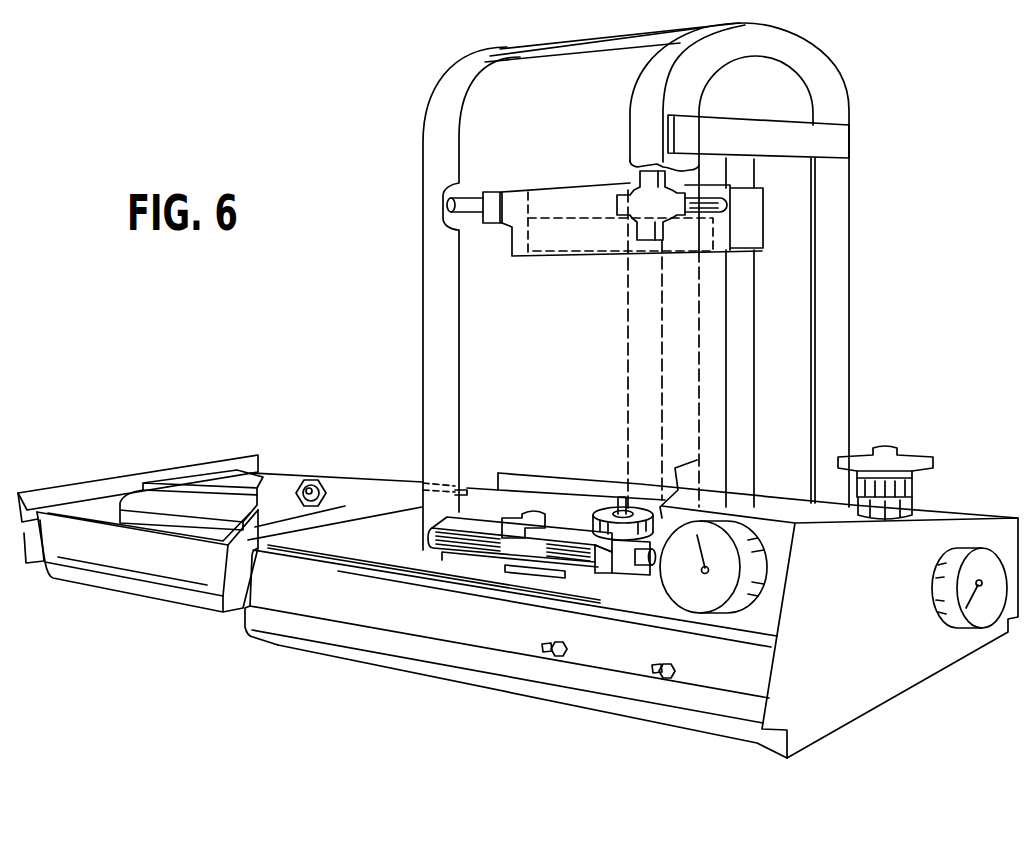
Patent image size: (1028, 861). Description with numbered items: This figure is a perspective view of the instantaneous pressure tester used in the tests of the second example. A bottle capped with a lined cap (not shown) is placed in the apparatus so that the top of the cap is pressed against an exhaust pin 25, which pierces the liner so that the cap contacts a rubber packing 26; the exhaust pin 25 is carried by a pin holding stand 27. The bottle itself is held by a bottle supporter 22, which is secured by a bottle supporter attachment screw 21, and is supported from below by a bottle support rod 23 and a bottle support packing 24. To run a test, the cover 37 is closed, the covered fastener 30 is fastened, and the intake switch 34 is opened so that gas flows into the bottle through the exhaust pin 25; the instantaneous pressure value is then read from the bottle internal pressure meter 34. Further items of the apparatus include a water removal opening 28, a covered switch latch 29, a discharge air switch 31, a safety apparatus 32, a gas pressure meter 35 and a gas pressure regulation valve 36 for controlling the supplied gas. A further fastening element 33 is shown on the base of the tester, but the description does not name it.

The bottle supporter attachment screw 21 is at (633, 176).
The bottle supporter 22 is at (563, 178).
The bottle support rod 23 is at (446, 202).
The bottle support packing 24 is at (588, 238).
The exhaust pin 25 is at (620, 497).
The rubber packing 26 is at (607, 513).
The pin holding stand 27 is at (587, 520).
The water removal opening 28 is at (313, 480).
The covered switch latch 29 is at (497, 562).
The covered fastener 30 is at (527, 540).
The discharge air switch 31 is at (545, 651).
The safety apparatus 32 is at (643, 568).
The bolt 33 is at (658, 675).
The intake switch 34 is at (723, 588).
The gas pressure meter 35 is at (960, 598).
The gas pressure regulation valve 36 is at (887, 453).
The cover 37 is at (607, 65).